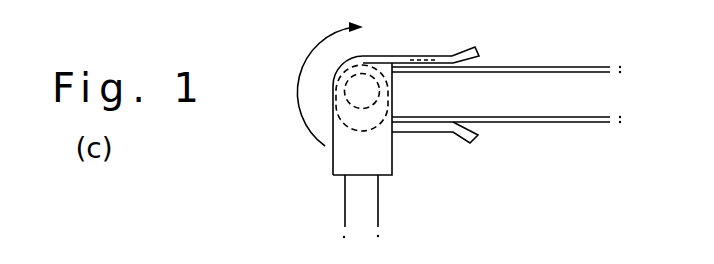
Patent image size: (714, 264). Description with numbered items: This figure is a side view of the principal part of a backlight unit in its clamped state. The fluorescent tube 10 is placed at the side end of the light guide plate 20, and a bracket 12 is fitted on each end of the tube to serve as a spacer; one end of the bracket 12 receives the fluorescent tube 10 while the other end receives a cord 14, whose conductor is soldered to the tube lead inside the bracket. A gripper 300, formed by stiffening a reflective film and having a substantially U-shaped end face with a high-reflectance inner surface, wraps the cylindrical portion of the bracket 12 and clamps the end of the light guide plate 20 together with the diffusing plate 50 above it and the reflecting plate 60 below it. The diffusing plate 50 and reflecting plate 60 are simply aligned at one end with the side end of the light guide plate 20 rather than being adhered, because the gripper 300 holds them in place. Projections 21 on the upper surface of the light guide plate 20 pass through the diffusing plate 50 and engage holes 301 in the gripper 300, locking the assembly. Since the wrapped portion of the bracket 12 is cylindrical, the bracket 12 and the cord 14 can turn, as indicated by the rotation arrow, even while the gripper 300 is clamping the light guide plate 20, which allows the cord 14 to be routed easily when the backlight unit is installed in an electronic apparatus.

The fluorescent tube 10 is at (359, 66).
The bracket 12 is at (340, 158).
The cord 14 is at (350, 202).
The light guide plate 20 is at (533, 108).
The projection 21 is at (420, 58).
The diffusing plate 50 is at (545, 67).
The reflecting plate 60 is at (553, 122).
The gripper 300 is at (430, 132).
The hole 301 is at (427, 57).